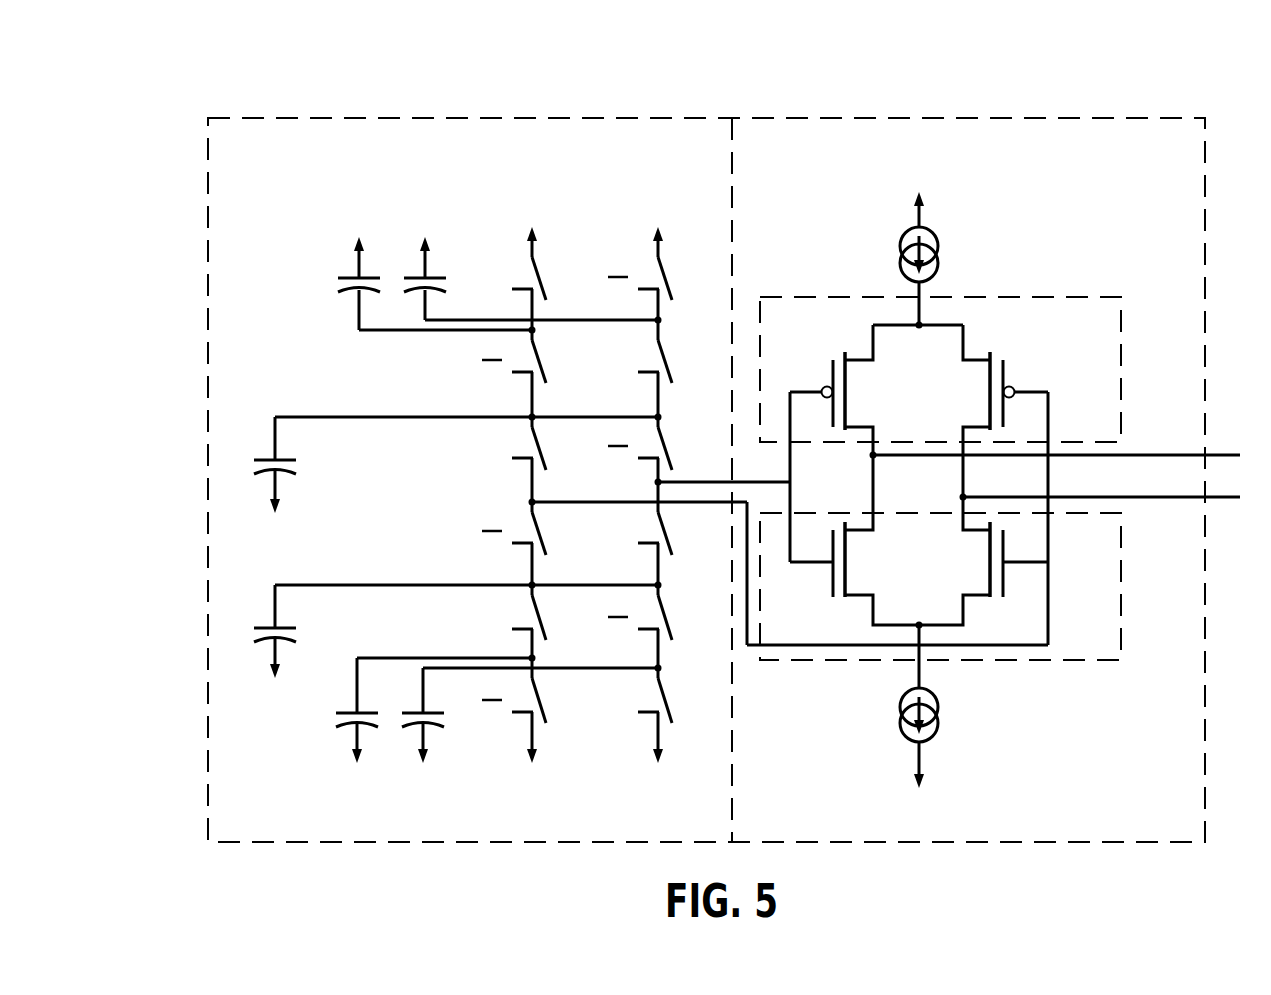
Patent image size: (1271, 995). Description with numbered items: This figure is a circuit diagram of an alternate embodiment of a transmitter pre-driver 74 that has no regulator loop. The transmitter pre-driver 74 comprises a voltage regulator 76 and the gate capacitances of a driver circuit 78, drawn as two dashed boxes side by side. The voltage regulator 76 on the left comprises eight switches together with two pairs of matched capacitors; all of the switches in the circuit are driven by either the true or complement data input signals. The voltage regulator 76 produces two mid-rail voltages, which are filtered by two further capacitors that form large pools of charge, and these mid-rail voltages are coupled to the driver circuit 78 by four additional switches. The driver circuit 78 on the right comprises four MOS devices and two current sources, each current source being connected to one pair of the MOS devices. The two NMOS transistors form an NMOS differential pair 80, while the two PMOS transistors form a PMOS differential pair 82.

The transmitter pre-driver 74 is at (809, 76).
The voltage regulator 76 is at (437, 118).
The driver circuit 78 is at (980, 118).
The NMOS differential pair 80 is at (1121, 607).
The PMOS differential pair 82 is at (1121, 335).